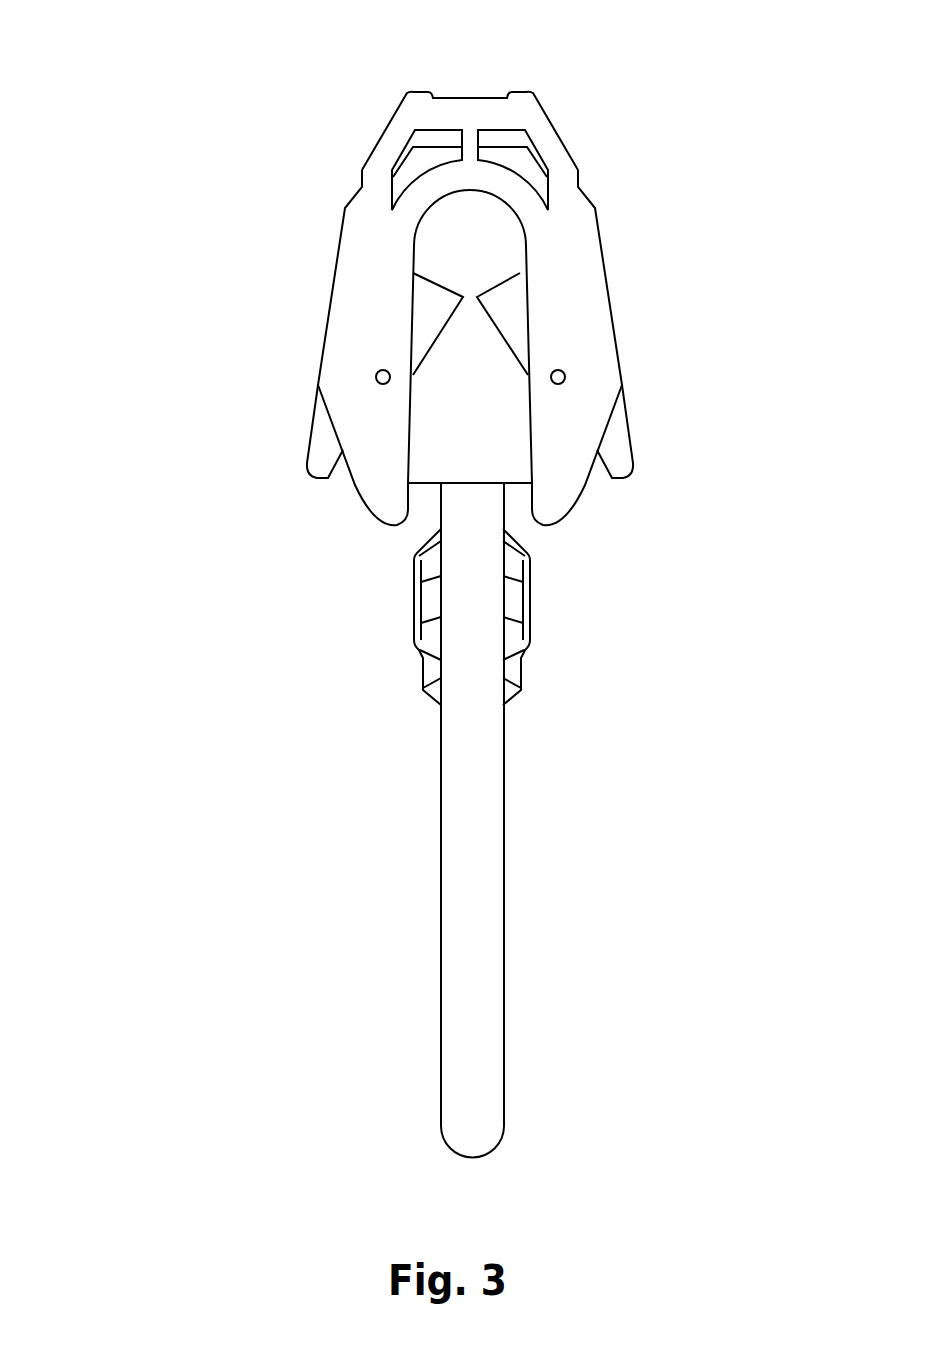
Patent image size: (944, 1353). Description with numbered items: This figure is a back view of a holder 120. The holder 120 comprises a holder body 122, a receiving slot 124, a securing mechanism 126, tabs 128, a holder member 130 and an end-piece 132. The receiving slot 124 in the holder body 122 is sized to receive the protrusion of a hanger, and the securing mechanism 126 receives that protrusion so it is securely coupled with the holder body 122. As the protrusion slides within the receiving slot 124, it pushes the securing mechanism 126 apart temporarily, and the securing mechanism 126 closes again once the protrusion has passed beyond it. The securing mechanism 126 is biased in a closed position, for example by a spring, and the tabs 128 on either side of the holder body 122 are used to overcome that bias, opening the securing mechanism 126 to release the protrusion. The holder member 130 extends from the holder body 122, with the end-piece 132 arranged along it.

The holder 120 is at (223, 37).
The holder body 122 is at (418, 90).
The receiving slot 124 is at (488, 437).
The securing mechanism 126 is at (510, 303).
The tabs 128 is at (315, 478).
The holder member 130 is at (504, 965).
The end-piece 132 is at (530, 622).